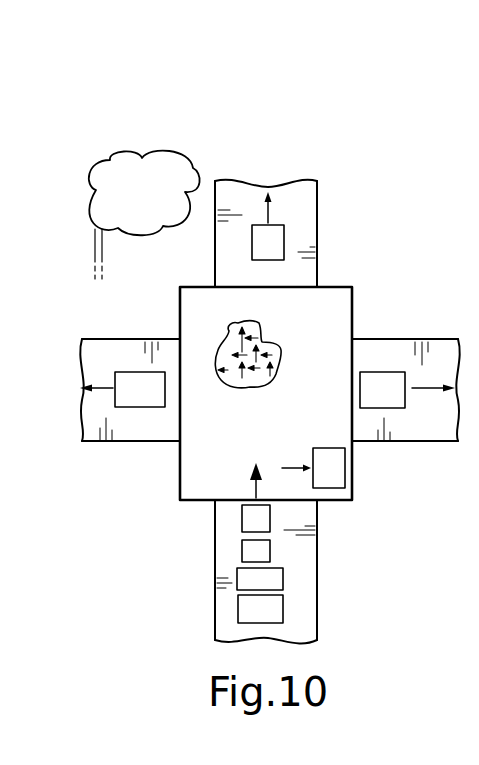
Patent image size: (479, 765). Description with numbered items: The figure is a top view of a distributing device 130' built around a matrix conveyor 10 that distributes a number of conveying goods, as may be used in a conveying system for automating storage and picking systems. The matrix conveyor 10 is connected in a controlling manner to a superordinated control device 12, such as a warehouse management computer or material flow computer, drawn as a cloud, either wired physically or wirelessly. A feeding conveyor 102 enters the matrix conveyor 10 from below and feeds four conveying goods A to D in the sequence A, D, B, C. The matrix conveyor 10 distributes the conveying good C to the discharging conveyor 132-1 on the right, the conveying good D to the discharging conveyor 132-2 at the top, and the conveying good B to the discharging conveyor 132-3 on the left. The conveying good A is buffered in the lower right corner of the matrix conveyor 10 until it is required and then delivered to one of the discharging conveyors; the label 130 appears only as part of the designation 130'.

The matrix conveyor 10 is at (338, 286).
The superordinated control device 12 is at (158, 201).
The feeding conveyor 102 is at (215, 572).
The distributing device 130' is at (401, 116).
The sorting arrangement 130 is at (401, 116).
The discharging conveyor 132-1 is at (398, 441).
The discharging conveyor 132-2 is at (215, 260).
The discharging conveyor 132-3 is at (118, 441).